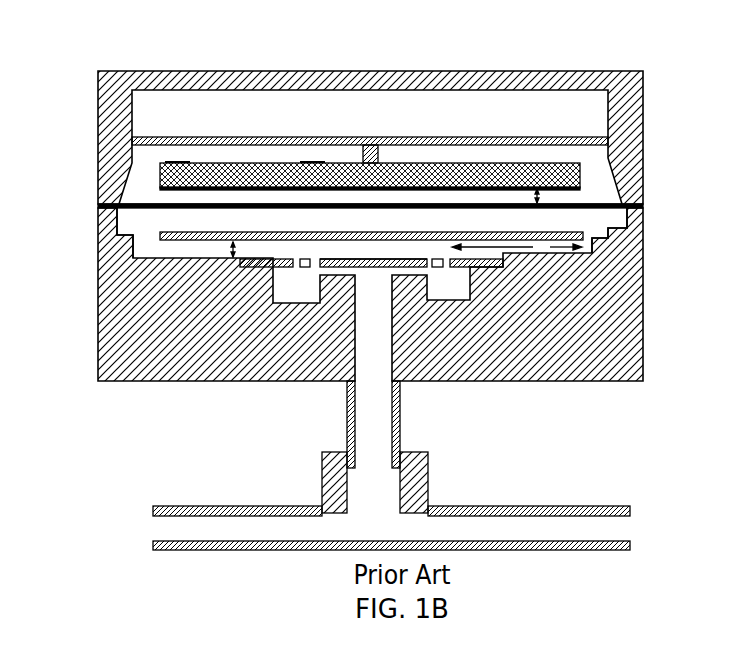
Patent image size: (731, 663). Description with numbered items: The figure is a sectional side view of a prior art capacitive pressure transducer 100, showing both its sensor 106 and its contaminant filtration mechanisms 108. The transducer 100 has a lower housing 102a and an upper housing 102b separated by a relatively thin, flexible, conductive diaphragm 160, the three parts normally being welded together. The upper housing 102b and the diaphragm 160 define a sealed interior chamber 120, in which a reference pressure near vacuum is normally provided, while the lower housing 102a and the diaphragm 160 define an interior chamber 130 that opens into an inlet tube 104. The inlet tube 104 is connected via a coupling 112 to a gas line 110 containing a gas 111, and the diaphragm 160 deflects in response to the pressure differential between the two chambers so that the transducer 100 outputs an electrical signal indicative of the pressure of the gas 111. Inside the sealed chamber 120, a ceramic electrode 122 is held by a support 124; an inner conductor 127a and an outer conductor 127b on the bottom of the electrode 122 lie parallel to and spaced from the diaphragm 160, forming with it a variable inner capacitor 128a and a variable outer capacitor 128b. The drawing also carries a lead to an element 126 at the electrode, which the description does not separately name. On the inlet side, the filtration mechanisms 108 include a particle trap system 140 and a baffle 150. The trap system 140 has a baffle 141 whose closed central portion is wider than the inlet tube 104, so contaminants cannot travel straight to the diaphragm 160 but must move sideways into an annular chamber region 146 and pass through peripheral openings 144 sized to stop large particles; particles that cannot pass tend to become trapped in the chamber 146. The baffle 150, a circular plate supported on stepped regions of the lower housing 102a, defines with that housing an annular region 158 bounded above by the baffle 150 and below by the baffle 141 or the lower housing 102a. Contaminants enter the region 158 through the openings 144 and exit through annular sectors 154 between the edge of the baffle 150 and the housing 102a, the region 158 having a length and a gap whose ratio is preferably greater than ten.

The pressure transducer 100 is at (124, 405).
The lower housing 102a is at (537, 382).
The upper housing 102b is at (607, 70).
The inlet tube 104 is at (400, 425).
The sensor 106 is at (149, 195).
The filtration mechanisms 108 is at (516, 277).
The gas line 110 is at (540, 500).
The gas 111 is at (352, 537).
The coupling 112 is at (430, 487).
The sealed interior chamber 120 is at (197, 126).
The ceramic electrode 122 is at (468, 158).
The support 124 is at (367, 147).
The upper electrode plate 126 is at (583, 160).
The inner conductor 127a is at (300, 158).
The outer conductor 127b is at (170, 158).
The variable inner capacitor 128a is at (380, 191).
The variable outer capacitor 128b is at (227, 205).
The interior chamber 130 is at (185, 237).
The particle trap system 140 is at (373, 272).
The baffle 141 is at (386, 258).
The openings 144 is at (302, 263).
The annular chamber region 146 is at (430, 303).
The baffle 150 is at (497, 229).
The annular sectors 154 is at (160, 238).
The region 158 is at (187, 252).
The diaphragm 160 is at (600, 200).